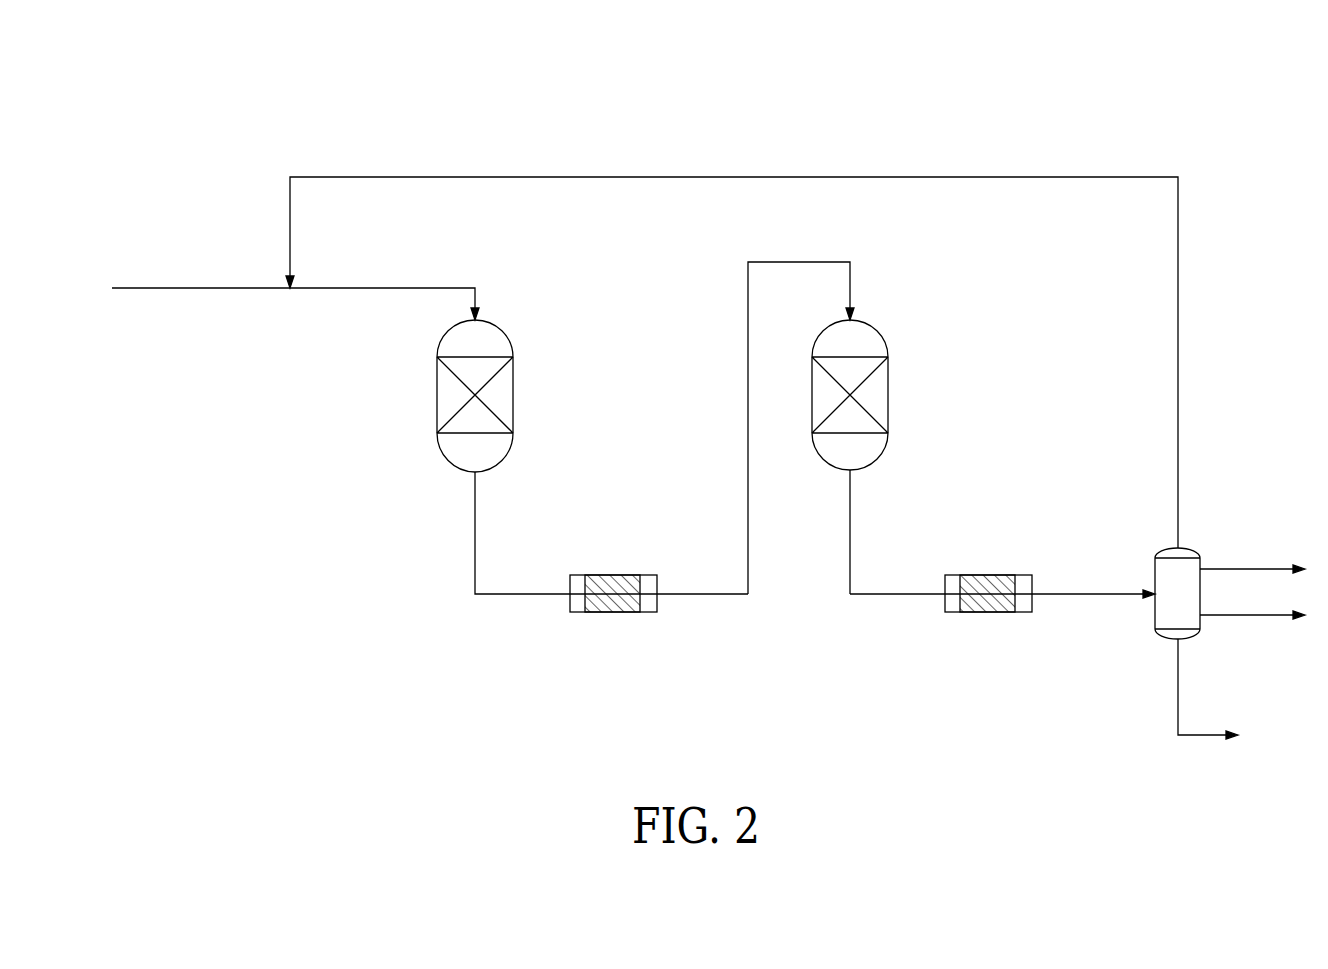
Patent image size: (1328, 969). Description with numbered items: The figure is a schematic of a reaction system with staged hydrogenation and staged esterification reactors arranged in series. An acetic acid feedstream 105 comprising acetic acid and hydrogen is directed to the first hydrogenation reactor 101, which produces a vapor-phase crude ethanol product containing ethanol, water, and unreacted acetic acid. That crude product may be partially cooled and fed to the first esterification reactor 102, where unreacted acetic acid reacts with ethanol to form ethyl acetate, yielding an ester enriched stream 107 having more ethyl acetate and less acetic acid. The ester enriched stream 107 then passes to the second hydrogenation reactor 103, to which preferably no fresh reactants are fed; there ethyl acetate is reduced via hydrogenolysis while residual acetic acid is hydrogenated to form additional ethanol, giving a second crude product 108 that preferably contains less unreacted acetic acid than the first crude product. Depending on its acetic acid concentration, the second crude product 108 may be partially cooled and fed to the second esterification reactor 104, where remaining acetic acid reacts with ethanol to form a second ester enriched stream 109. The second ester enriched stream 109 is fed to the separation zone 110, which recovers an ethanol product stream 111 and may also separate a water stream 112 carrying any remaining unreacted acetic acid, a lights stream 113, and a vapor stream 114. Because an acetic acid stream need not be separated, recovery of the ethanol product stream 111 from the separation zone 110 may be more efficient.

The hydrogenation reactor 101 is at (437, 392).
The esterification reactor 102 is at (612, 612).
The second hydrogenation reactor 103 is at (888, 392).
The second esterification reactor 104 is at (987, 612).
The acetic acid feedstream 105 is at (200, 288).
The ester enriched stream 107 is at (748, 488).
The second crude product 108 is at (849, 512).
The second ester enriched stream 109 is at (1078, 594).
The separation zone 110 is at (1157, 549).
The ethanol product stream 111 is at (1250, 616).
The water stream 112 is at (1200, 737).
The lights stream 113 is at (1250, 568).
The vapor stream 114 is at (763, 178).